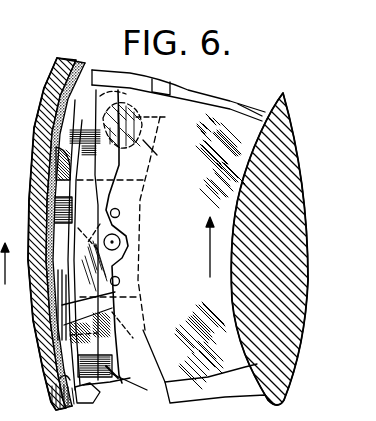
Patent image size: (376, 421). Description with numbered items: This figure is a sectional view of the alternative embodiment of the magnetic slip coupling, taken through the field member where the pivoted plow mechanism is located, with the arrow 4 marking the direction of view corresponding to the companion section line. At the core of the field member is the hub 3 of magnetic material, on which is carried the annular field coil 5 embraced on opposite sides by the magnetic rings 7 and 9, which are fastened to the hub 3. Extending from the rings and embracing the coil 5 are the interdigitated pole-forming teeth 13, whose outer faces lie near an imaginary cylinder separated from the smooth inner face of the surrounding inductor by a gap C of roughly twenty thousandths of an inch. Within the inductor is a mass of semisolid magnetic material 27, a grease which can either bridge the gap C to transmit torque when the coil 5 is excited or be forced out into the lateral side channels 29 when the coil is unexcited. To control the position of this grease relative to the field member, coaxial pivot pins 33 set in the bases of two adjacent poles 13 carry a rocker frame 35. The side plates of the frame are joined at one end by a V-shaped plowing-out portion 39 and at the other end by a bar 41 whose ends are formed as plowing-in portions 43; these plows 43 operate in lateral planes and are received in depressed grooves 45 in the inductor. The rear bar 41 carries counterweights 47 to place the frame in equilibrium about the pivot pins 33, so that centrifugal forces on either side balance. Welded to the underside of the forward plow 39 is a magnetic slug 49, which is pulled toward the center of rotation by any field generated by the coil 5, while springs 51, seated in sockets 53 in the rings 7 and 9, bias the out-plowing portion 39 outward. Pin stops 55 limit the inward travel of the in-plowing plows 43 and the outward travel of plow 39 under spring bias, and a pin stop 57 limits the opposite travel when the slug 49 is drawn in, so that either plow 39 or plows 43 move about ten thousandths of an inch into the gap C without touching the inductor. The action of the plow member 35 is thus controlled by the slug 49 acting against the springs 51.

The hub 3 is at (293, 172).
The direction arrow 4 is at (107, 251).
The annular field coil 5 is at (240, 102).
The magnetic ring 7 is at (204, 98).
The magnetic ring 9 is at (154, 80).
The pole-forming teeth 13 is at (102, 72).
The semisolid magnetic material 27 is at (60, 380).
The side channels 29 is at (57, 237).
The pivot pins 33 is at (120, 243).
The rocker frame 35 is at (104, 173).
The plowing-out portion 39 is at (70, 73).
The bar 41 is at (128, 371).
The plowing-in portions 43 is at (122, 320).
The depressed grooves 45 is at (60, 128).
The counterweights 47 is at (120, 371).
The magnetic slug 49 is at (106, 122).
The springs 51 is at (160, 151).
The sockets 53 is at (158, 118).
The pin stops 55 is at (120, 281).
The pin stop 57 is at (120, 212).
The gap C is at (88, 82).